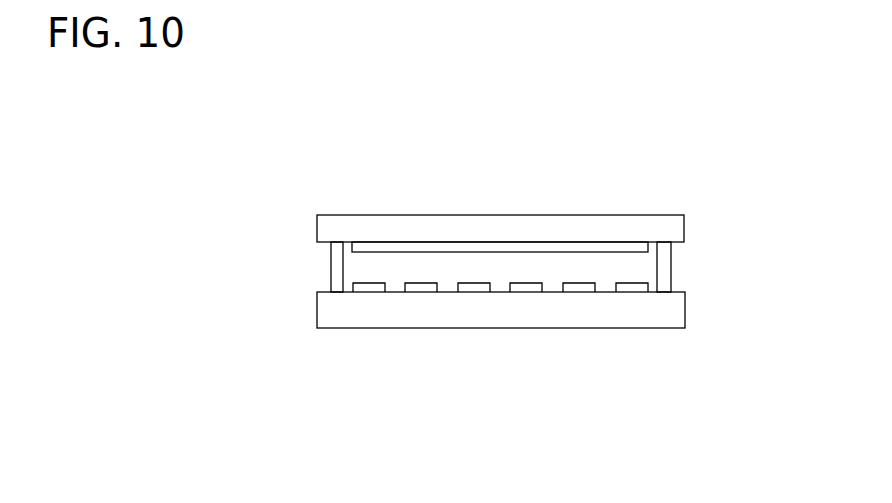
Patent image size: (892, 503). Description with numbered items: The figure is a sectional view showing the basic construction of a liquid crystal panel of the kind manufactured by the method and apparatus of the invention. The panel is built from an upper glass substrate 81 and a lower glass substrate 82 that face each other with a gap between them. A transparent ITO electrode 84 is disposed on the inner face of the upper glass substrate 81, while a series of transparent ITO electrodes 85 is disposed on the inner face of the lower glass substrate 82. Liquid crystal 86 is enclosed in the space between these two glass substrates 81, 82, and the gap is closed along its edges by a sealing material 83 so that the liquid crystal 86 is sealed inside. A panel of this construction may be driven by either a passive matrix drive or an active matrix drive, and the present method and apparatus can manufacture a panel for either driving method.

The upper glass substrate 81 is at (633, 222).
The lower glass substrate 82 is at (630, 320).
The sealing material 83 is at (672, 267).
The transparent ITO electrode 84 is at (495, 248).
The transparent ITO electrode 85 is at (478, 290).
The liquid crystal 86 is at (355, 267).